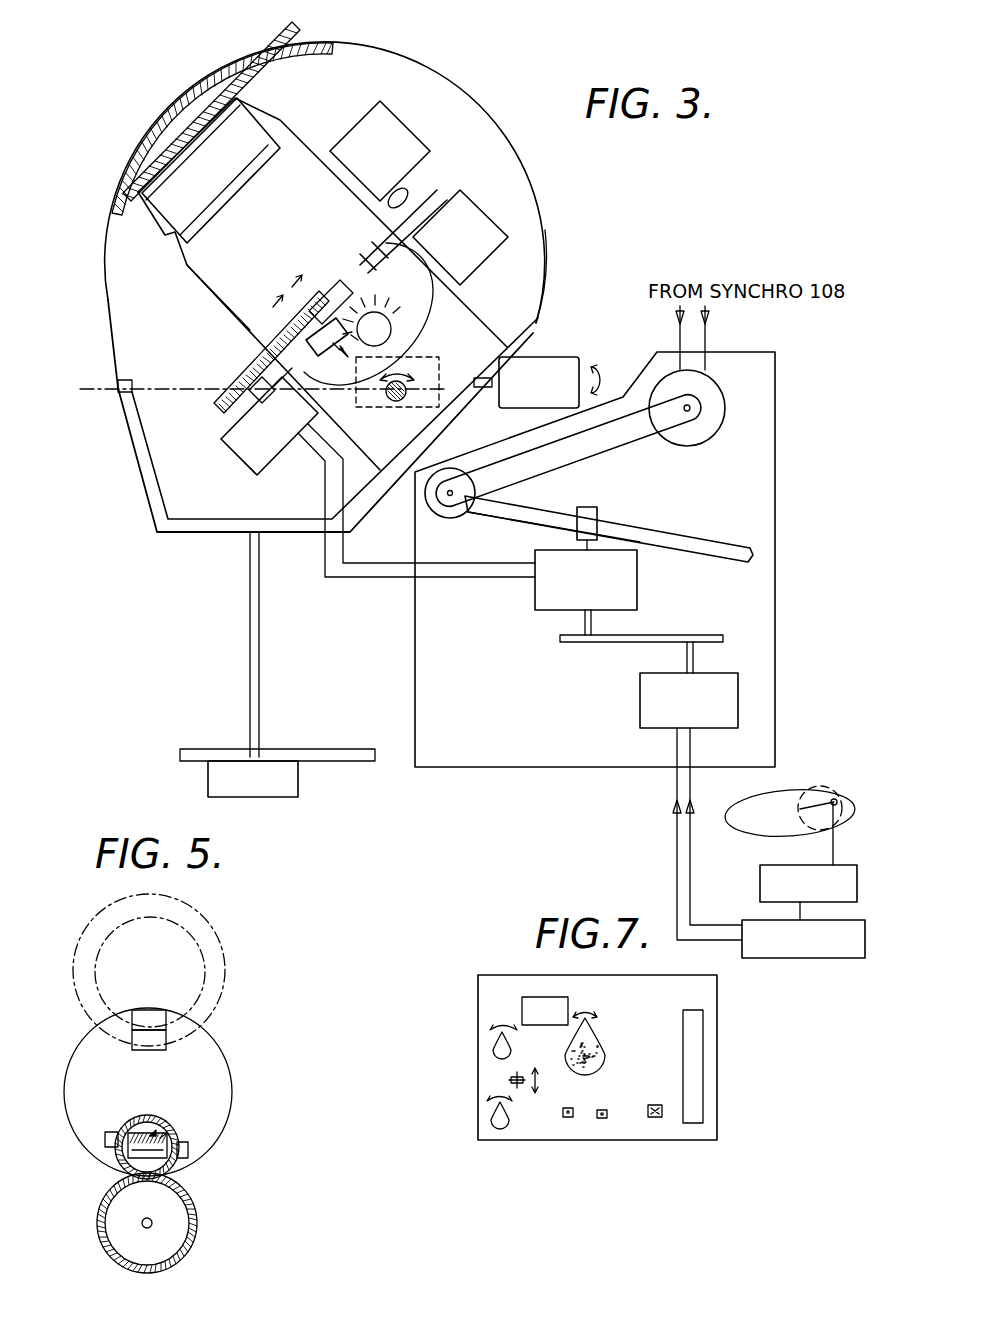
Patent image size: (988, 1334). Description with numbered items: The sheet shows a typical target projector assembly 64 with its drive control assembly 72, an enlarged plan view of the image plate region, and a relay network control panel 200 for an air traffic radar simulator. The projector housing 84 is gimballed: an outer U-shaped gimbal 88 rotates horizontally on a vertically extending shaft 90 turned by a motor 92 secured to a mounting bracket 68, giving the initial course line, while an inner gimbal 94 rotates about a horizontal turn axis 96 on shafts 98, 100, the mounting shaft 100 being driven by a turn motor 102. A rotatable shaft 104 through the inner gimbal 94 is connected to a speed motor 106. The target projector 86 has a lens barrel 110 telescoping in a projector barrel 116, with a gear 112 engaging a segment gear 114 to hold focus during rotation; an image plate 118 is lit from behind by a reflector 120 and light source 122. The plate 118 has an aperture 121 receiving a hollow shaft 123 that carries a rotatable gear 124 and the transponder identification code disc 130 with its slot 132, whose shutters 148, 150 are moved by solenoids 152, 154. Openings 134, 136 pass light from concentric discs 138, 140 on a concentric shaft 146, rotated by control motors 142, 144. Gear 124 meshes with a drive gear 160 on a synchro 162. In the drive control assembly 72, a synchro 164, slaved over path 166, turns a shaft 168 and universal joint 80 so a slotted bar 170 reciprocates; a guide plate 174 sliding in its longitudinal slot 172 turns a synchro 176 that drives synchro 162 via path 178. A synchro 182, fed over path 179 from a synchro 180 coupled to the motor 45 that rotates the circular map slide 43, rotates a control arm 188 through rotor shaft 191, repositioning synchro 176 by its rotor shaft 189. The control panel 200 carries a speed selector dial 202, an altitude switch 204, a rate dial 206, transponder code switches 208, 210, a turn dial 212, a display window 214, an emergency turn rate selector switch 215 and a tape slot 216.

In FIG. 3, the information bearing slide 43 is at (796, 790).
In FIG. 3, the motor 45 is at (840, 865).
In FIG. 3, the target projector assembly 64 is at (325, 178).
In FIG. 3, the mounting bracket 68 is at (325, 762).
In FIG. 3, the drive control assembly 72 is at (777, 406).
In FIG. 3, the universal joint 80 is at (445, 516).
In FIG. 3, the projector housing 84 is at (482, 90).
In FIG. 3, the target projector 86 is at (299, 127).
In FIG. 3, the outer U-shaped gimbal 88 is at (130, 430).
In FIG. 3, the vertically extending shaft 90 is at (249, 616).
In FIG. 3, the motor 92 is at (253, 798).
In FIG. 3, the inner gimbal 94 is at (543, 212).
In FIG. 3, the horizontal turn axis 96 is at (165, 386).
In FIG. 3, the shaft 98 is at (118, 380).
In FIG. 3, the mounting shaft 100 is at (528, 341).
In FIG. 3, the turn motor 102 is at (592, 364).
In FIG. 3, the rotatable shaft 104 is at (393, 402).
In FIG. 3, the speed motor 106 is at (430, 356).
In FIG. 3, the lens barrel 110 is at (250, 120).
In FIG. 3, the gear 112 is at (271, 60).
In FIG. 3, the segment gear 114 is at (172, 102).
In FIG. 3, the projector barrel 116 is at (212, 283).
In FIG. 3, the image plate 118 is at (334, 289).
In FIG. 5, the image plate 118 is at (231, 1086).
In FIG. 3, the reflector 120 is at (412, 287).
In FIG. 3, the aperture 121 is at (320, 300).
In FIG. 5, the aperture 121 is at (167, 1132).
In FIG. 3, the light source 122 is at (374, 306).
In FIG. 3, the hollow shaft 123 is at (328, 345).
In FIG. 3, the rotatable gear 124 is at (275, 305).
In FIG. 5, the rotatable gear 124 is at (156, 1130).
In FIG. 3, the transponder identification code disc 130 is at (308, 370).
In FIG. 5, the transponder identification code disc 130 is at (118, 1166).
In FIG. 5, the slot 132 is at (126, 1134).
In FIG. 3, the opening 134 is at (364, 256).
In FIG. 5, the opening 134 is at (167, 1040).
In FIG. 3, the opening 136 is at (376, 242).
In FIG. 5, the opening 136 is at (167, 1018).
In FIG. 3, the disc 138 is at (440, 188).
In FIG. 5, the disc 138 is at (207, 976).
In FIG. 3, the disc 140 is at (400, 196).
In FIG. 5, the disc 140 is at (205, 954).
In FIG. 3, the control motor 142 is at (493, 213).
In FIG. 3, the control motor 144 is at (400, 118).
In FIG. 3, the concentric shaft 146 is at (358, 192).
In FIG. 5, the shutter 148 is at (142, 1132).
In FIG. 5, the shutter 150 is at (174, 1170).
In FIG. 5, the solenoid 152 is at (105, 1140).
In FIG. 5, the solenoid 154 is at (188, 1150).
In FIG. 3, the drive gear 160 is at (262, 364).
In FIG. 5, the drive gear 160 is at (198, 1222).
In FIG. 3, the synchro 162 is at (222, 448).
In FIG. 3, the synchro 164 is at (700, 446).
In FIG. 3, the path 166 is at (682, 335).
In FIG. 3, the shaft 168 is at (592, 452).
In FIG. 3, the slotted bar 170 is at (644, 532).
In FIG. 3, the longitudinal slot 172 is at (522, 512).
In FIG. 3, the guide plate 174 is at (590, 506).
In FIG. 3, the synchro 176 is at (638, 574).
In FIG. 3, the path 178 is at (452, 578).
In FIG. 3, the path 179 is at (676, 863).
In FIG. 3, the synchro 180 is at (815, 958).
In FIG. 3, the synchro 182 is at (640, 718).
In FIG. 3, the control arm 188 is at (645, 635).
In FIG. 3, the rotor shaft 189 is at (583, 622).
In FIG. 3, the rotor shaft 191 is at (694, 656).
In FIG. 7, the control panel 200 is at (643, 981).
In FIG. 7, the speed selector dial 202 is at (493, 1050).
In FIG. 7, the switch 204 is at (509, 1080).
In FIG. 7, the dial 206 is at (491, 1120).
In FIG. 7, the switch 208 is at (568, 1118).
In FIG. 7, the switch 210 is at (602, 1119).
In FIG. 7, the turn dial 212 is at (605, 1055).
In FIG. 7, the display window 214 is at (530, 997).
In FIG. 7, the emergency turn rate selector switch 215 is at (656, 1118).
In FIG. 7, the slot 216 is at (704, 1035).